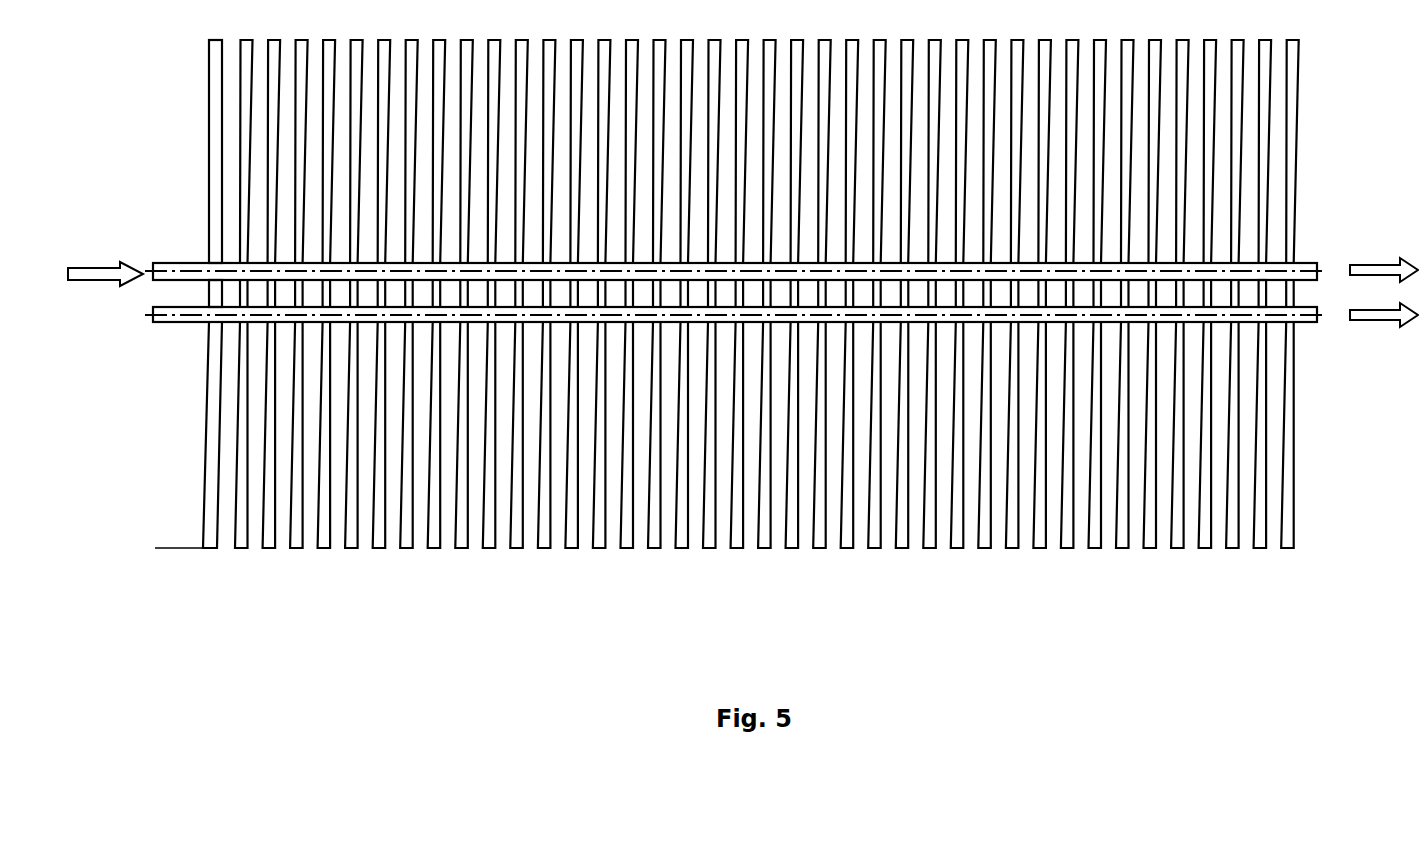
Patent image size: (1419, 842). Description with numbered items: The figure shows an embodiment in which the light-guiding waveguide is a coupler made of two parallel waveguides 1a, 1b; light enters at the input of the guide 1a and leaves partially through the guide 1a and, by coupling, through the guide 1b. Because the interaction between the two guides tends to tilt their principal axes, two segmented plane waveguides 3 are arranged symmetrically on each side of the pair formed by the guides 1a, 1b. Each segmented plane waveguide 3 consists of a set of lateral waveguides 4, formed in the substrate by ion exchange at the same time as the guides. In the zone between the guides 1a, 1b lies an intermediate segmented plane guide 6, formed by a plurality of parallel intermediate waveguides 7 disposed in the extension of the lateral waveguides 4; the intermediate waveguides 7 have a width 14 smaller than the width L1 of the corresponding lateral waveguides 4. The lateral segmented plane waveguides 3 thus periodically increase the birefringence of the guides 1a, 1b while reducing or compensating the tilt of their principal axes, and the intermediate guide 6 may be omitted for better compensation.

The waveguide 1a is at (200, 262).
The waveguide 1b is at (170, 323).
The segmented plane waveguide 3 is at (1302, 150).
The lateral waveguide 4 is at (207, 151).
The intermediate segmented plane guide 6 is at (1303, 291).
The intermediate waveguide 7 is at (1266, 293).
The width 14 is at (240, 289).
The width L1 is at (181, 324).